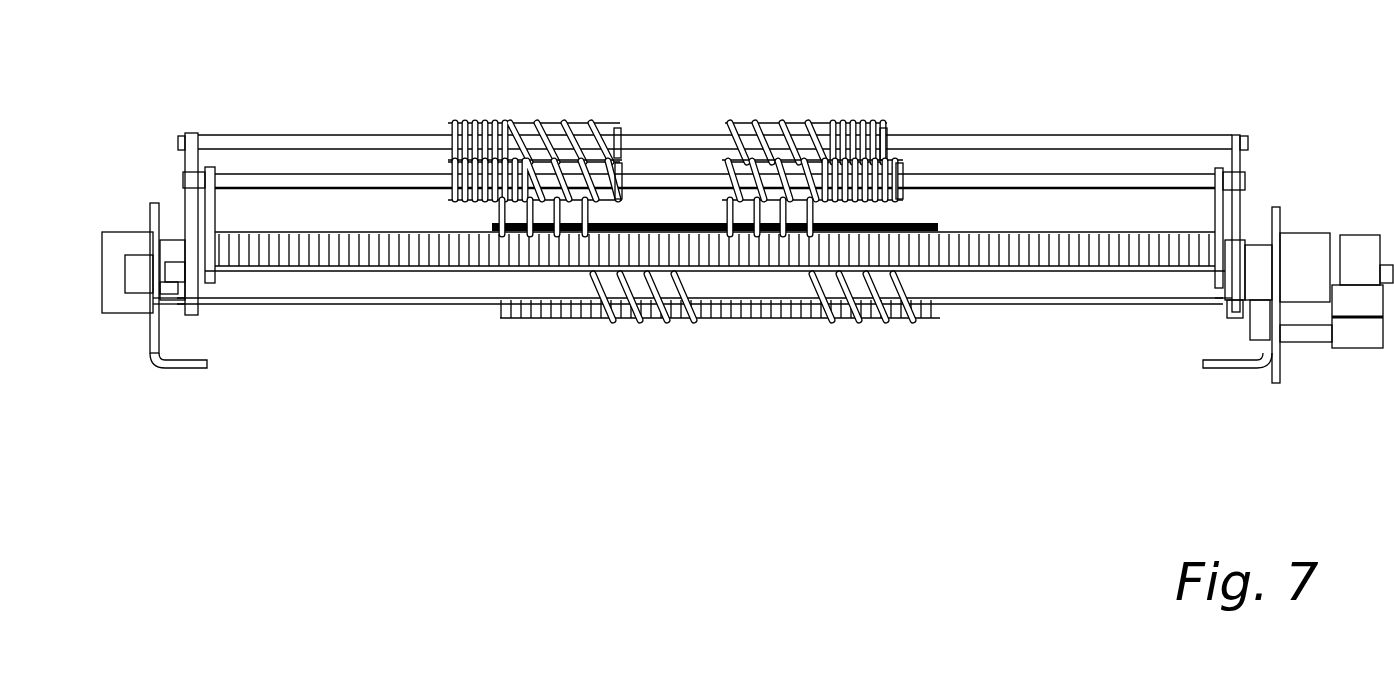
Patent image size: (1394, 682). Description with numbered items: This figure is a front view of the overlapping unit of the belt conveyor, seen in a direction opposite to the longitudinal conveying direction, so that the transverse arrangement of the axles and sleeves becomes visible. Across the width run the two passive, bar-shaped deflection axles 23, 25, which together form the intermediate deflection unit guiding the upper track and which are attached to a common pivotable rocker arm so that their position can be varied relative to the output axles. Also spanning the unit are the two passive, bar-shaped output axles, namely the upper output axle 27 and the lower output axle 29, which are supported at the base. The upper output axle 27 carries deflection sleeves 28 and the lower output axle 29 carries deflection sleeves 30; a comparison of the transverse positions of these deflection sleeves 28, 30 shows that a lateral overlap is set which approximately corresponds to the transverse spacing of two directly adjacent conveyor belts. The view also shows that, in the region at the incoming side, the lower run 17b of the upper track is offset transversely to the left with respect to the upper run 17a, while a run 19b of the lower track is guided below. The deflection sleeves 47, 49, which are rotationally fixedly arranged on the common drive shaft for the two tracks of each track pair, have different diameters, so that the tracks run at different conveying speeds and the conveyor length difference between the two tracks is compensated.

The deflection axle 23 is at (982, 140).
The deflection axle 25 is at (1057, 199).
The upper output axle 27 is at (265, 178).
The deflection sleeves 28 is at (675, 123).
The upper run 17a is at (600, 148).
The lower run 17b is at (498, 209).
The lower output axle 29 is at (307, 277).
The deflection sleeves 30 is at (693, 258).
The run of the lower track 19b is at (578, 289).
The deflection sleeve 47 is at (544, 351).
The deflection sleeve 49 is at (658, 351).